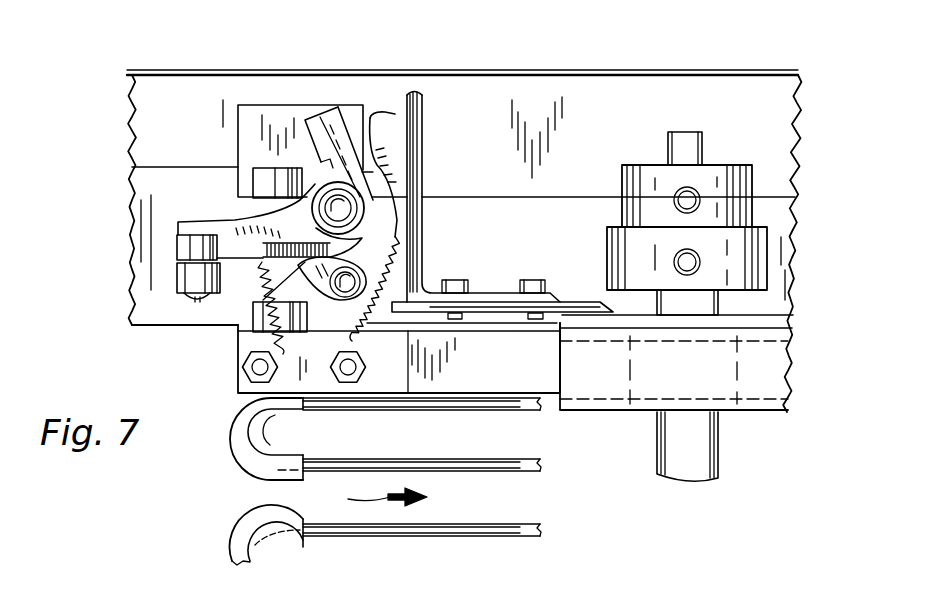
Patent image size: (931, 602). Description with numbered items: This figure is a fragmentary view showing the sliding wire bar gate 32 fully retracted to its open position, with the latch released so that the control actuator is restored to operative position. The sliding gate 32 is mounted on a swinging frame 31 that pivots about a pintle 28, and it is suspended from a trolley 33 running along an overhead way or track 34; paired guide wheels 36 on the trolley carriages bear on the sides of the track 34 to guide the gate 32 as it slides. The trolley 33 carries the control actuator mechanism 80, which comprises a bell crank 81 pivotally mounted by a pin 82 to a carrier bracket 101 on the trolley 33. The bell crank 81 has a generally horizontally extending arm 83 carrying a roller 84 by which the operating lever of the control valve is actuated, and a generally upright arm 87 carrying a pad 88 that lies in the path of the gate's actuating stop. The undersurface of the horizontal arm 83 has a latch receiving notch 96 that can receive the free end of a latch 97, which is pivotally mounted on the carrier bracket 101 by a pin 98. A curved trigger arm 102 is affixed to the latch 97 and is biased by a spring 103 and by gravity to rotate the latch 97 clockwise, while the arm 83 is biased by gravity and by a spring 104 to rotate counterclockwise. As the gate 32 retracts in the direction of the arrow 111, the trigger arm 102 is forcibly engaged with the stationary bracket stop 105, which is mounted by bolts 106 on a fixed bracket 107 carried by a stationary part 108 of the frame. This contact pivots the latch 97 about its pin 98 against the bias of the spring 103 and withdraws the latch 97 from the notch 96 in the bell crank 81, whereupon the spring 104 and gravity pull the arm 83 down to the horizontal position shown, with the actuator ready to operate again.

The pintle 28 is at (780, 151).
The swinging frame 31 is at (764, 88).
The sliding wire bar gate 32 is at (273, 491).
The trolley 33 is at (475, 375).
The overhead way or track 34 is at (197, 305).
The guide wheels 36 is at (275, 177).
The control actuator mechanism 80 is at (223, 125).
The bell crank 81 is at (360, 178).
The pin 82 is at (352, 205).
The horizontally extending arm 83 is at (198, 223).
The roller 84 is at (193, 277).
The upright arm 87 is at (337, 118).
The pad 88 is at (307, 120).
The latch receiving notch 96 is at (343, 245).
The latch 97 is at (253, 310).
The pin 98 is at (350, 293).
The carrier bracket 101 is at (267, 115).
The curved trigger arm 102 is at (390, 128).
The spring 103 is at (408, 272).
The spring 104 is at (253, 337).
The stationary bracket stop 105 is at (418, 100).
The bolts 106 is at (458, 281).
The fixed bracket 107 is at (580, 302).
The stationary part of the frame 108 is at (737, 360).
The arrow 111 is at (371, 495).